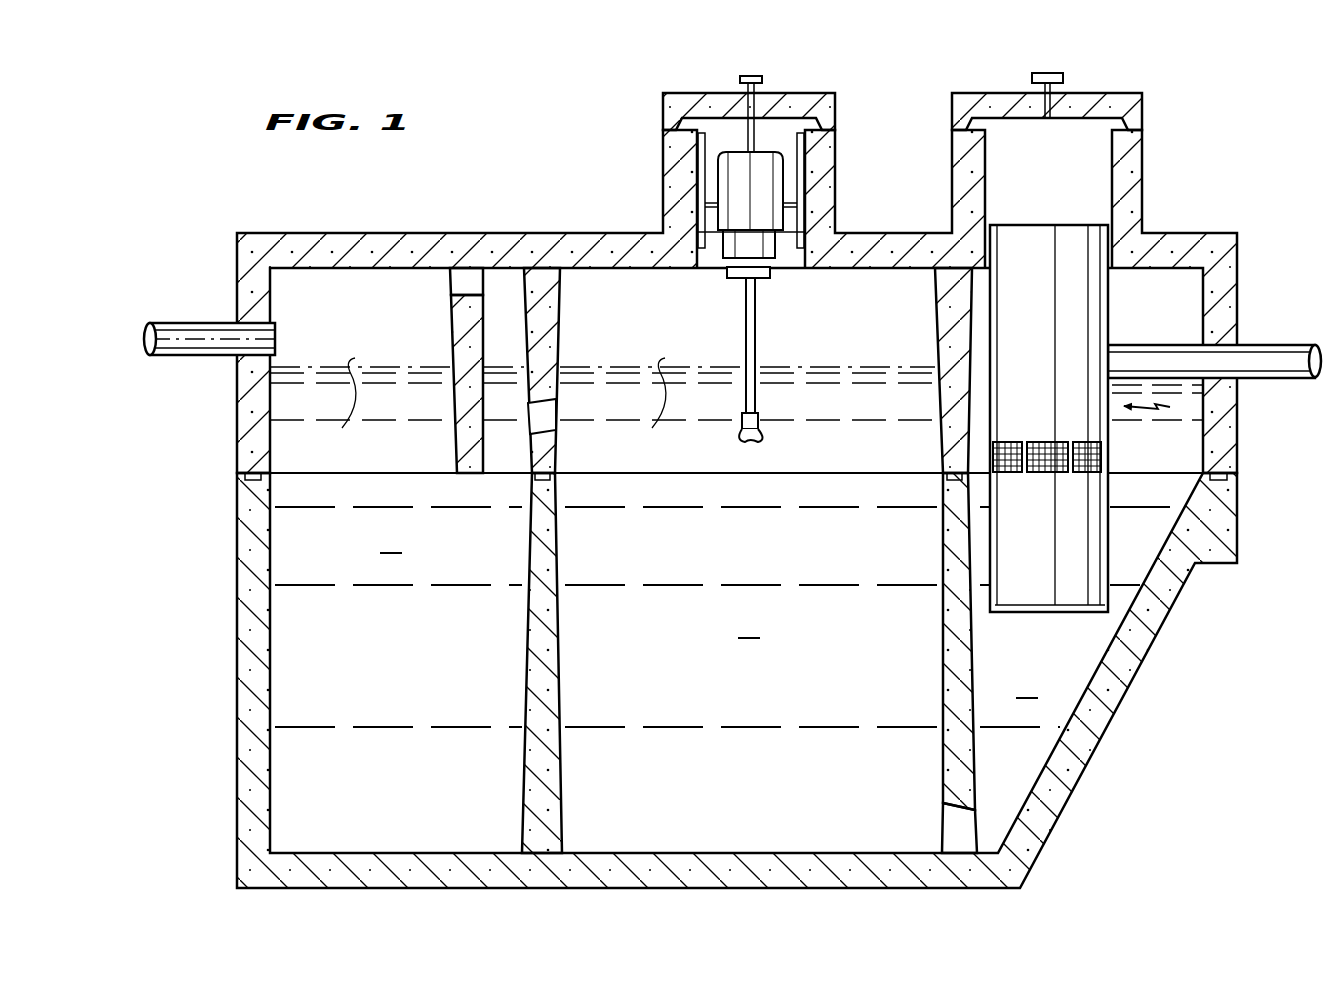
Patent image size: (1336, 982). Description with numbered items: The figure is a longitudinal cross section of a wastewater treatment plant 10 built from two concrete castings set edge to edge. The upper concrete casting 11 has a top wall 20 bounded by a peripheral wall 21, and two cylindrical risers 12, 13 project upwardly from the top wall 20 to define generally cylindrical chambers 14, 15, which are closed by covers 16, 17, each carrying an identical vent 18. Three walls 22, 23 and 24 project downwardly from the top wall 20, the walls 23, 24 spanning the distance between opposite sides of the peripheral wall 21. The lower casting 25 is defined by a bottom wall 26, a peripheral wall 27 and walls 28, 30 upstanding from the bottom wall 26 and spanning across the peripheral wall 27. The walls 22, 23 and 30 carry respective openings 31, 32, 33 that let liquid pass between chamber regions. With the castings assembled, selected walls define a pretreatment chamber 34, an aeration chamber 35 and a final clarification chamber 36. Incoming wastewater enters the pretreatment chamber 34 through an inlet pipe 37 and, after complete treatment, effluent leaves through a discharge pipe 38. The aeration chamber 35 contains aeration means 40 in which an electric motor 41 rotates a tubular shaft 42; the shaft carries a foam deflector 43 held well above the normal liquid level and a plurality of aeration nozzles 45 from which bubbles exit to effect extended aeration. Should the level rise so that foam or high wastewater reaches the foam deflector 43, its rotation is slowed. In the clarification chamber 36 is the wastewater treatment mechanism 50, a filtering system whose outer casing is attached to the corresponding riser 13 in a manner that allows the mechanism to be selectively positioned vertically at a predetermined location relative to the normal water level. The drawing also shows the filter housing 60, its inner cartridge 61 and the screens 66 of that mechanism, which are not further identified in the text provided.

The wastewater treatment plant 10 is at (1203, 94).
The upper concrete casting 11 is at (430, 236).
The cylindrical riser 12 is at (822, 163).
The cylindrical riser 13 is at (1130, 168).
The cylindrical chamber 14 is at (782, 124).
The cylindrical chamber 15 is at (1060, 173).
The cover 16 is at (700, 93).
The cover 17 is at (985, 93).
The vent 18 is at (757, 72).
The top wall 20 is at (598, 240).
The peripheral wall 21 is at (260, 305).
The wall 22 is at (462, 392).
The wall 23 is at (573, 370).
The wall 24 is at (950, 320).
The lower casting 25 is at (1128, 699).
The bottom wall 26 is at (765, 853).
The peripheral wall 27 is at (250, 705).
The wall 28 is at (556, 680).
The wall 30 is at (925, 560).
The opening 31 is at (455, 283).
The opening 32 is at (546, 416).
The opening 33 is at (950, 812).
The pretreatment chamber 34 is at (292, 555).
The aeration chamber 35 is at (582, 555).
The final clarification chamber 36 is at (1002, 686).
The inlet pipe 37 is at (195, 345).
The discharge pipe 38 is at (1285, 372).
The aeration means 40 is at (751, 318).
The electric motor 41 is at (762, 203).
The tubular shaft 42 is at (757, 345).
The foam deflector 43 is at (772, 280).
The aeration nozzles 45 is at (762, 430).
The wastewater treatment mechanism 50 is at (1162, 405).
The effluent filter housing 60 is at (1075, 418).
The filter cartridge 61 is at (1060, 383).
The filter screens 66 is at (1087, 477).